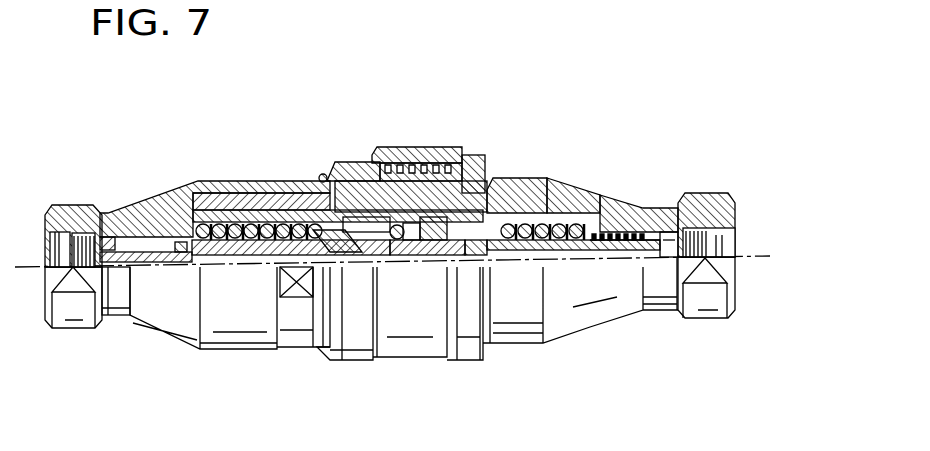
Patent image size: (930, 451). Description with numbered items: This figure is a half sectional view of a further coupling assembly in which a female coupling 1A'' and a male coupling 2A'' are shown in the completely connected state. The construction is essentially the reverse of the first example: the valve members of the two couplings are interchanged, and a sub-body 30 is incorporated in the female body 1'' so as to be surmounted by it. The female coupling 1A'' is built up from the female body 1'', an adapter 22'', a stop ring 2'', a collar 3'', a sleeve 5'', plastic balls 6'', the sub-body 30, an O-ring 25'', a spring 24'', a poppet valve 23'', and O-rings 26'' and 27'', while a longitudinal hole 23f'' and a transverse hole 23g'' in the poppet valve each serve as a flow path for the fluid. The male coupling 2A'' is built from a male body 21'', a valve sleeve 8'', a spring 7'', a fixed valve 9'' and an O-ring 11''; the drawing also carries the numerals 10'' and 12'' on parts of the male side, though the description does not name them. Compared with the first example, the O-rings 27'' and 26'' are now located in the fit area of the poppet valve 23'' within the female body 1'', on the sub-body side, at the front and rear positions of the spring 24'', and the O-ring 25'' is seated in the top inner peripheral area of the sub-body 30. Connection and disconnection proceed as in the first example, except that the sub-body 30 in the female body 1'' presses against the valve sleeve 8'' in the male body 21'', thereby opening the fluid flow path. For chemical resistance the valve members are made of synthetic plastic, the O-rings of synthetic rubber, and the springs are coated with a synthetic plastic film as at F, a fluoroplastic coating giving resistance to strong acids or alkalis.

The female coupling 1A'' is at (72, 212).
The male coupling 2A'' is at (706, 211).
The adapter 22'' is at (215, 237).
The spring 24'' is at (256, 161).
The female body 1'' is at (338, 159).
The synthetic plastic film F is at (244, 218).
The sub-body 30 is at (320, 175).
The stop ring 2'' is at (348, 133).
The collar 3'' is at (411, 147).
The sleeve 5'' is at (417, 115).
The plastic balls 6'' is at (471, 136).
The valve sleeve 8'' is at (517, 156).
The spring 7'' is at (573, 160).
The male body 21'' is at (580, 229).
The O-ring 26'' is at (127, 316).
The longitudinal hole 23f'' is at (157, 323).
The poppet valve 23'' is at (333, 321).
The O-ring 27'' is at (296, 318).
The transverse hole 23g'' is at (343, 312).
The O-ring 11'' is at (418, 325).
The O-ring 25'' is at (430, 324).
The spacer 10'' is at (491, 327).
The fixed valve 9'' is at (573, 315).
The spring 12'' is at (625, 314).